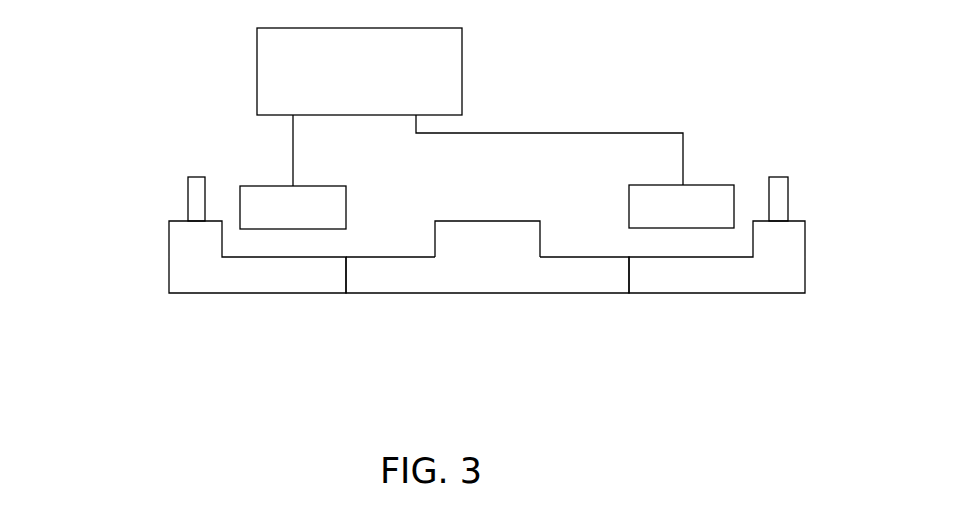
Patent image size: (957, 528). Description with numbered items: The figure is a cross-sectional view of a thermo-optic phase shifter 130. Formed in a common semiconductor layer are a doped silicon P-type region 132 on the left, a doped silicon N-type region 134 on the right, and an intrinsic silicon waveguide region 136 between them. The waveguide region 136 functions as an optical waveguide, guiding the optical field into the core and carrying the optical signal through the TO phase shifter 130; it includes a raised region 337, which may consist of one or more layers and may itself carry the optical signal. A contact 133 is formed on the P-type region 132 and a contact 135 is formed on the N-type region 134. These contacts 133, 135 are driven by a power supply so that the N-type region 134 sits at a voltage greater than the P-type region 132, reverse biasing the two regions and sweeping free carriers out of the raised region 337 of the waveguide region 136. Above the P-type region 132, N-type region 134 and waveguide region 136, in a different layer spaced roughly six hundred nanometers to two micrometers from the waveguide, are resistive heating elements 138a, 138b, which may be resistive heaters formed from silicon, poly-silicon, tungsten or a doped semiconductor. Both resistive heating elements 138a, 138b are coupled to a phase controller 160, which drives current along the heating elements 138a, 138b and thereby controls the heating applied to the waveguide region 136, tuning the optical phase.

The TO phase shifter 130 is at (141, 146).
The doped silicon P-type region 132 is at (169, 239).
The contact 133 is at (188, 195).
The doped silicon N-type region 134 is at (805, 255).
The contact 135 is at (788, 193).
The intrinsic silicon waveguide region 136 is at (470, 293).
The resistive heating element 138a is at (321, 219).
The resistive heating element 138b is at (710, 219).
The phase controller 160 is at (380, 85).
The raised region 337 is at (540, 235).